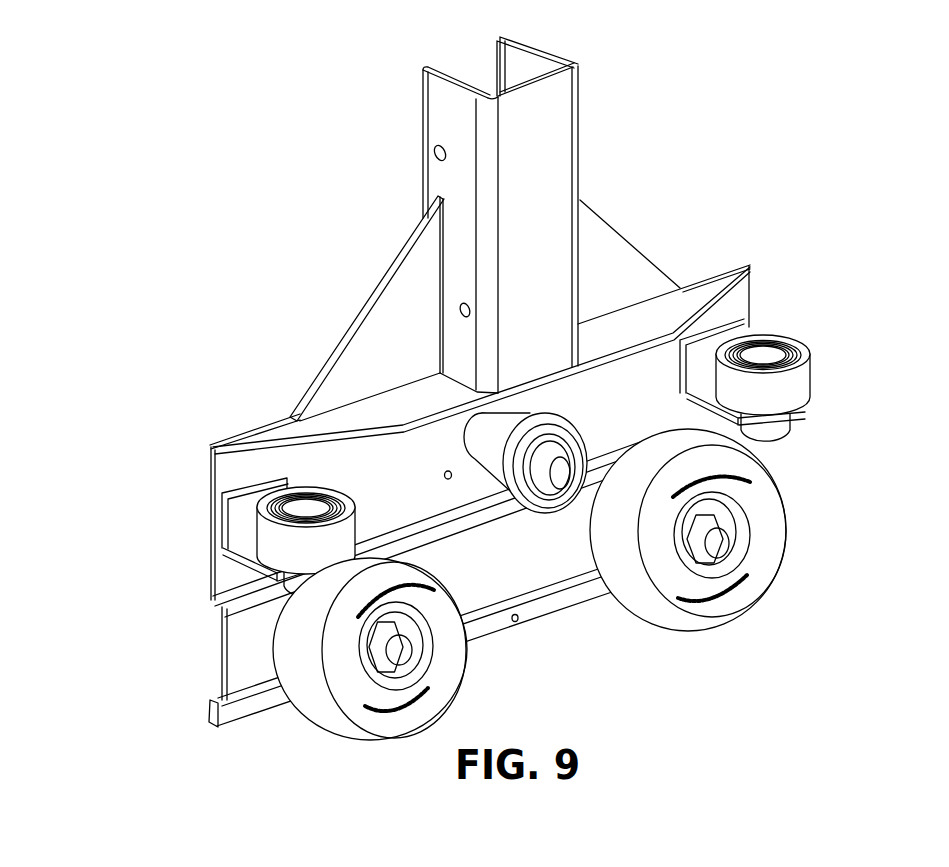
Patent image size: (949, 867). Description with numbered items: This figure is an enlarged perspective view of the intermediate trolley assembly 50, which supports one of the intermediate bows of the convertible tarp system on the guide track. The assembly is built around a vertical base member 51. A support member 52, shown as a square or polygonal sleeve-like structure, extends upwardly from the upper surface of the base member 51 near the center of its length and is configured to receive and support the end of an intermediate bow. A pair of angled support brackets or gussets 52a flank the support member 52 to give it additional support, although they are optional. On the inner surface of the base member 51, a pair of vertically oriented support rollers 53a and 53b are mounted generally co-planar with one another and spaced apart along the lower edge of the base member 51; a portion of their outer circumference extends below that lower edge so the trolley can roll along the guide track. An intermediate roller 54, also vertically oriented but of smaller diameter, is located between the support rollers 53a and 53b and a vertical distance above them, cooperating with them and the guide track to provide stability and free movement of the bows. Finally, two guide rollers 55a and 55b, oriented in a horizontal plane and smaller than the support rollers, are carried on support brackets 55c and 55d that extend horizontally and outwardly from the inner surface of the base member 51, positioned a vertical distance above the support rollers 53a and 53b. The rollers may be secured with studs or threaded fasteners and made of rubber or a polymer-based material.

The intermediate trolley assembly 50 is at (511, 388).
The base member 51 is at (698, 298).
The support member 52 is at (552, 143).
The angled support brackets or gussets 52a is at (388, 282).
The support roller 53a is at (762, 536).
The support roller 53b is at (300, 662).
The intermediate roller 54 is at (502, 450).
The guide roller 55a is at (803, 385).
The guide roller 55b is at (290, 537).
The support bracket 55c is at (732, 333).
The support bracket 55d is at (240, 517).